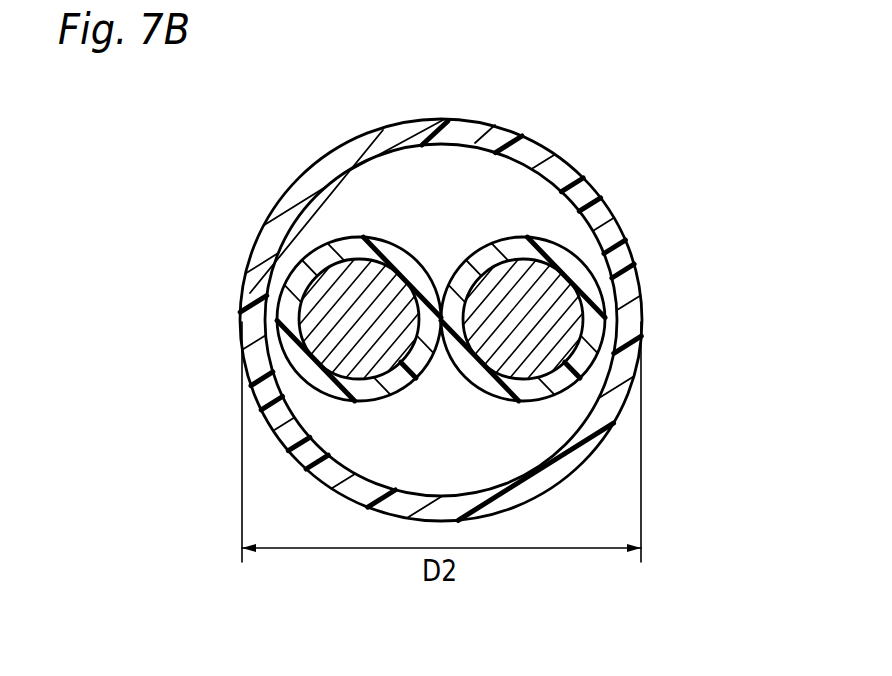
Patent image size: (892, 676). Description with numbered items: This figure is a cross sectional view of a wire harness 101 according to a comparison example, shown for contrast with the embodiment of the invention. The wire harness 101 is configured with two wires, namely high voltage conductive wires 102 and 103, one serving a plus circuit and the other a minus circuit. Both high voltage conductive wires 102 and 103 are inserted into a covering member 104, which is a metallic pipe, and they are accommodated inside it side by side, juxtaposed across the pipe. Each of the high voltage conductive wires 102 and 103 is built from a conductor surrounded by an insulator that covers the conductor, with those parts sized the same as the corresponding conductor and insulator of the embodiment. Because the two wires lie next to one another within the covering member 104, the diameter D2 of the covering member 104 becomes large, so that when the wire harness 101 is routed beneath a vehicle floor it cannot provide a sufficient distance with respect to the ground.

The wire harness 101 is at (256, 162).
The high voltage conductive wire 102 is at (152, 290).
The high voltage conductive wire 103 is at (735, 288).
The covering member 104 is at (611, 242).